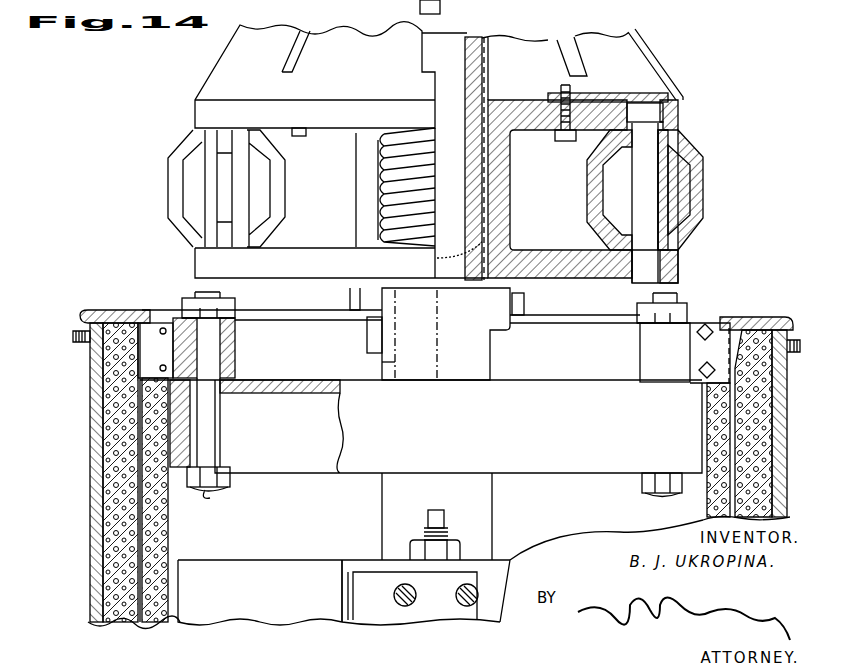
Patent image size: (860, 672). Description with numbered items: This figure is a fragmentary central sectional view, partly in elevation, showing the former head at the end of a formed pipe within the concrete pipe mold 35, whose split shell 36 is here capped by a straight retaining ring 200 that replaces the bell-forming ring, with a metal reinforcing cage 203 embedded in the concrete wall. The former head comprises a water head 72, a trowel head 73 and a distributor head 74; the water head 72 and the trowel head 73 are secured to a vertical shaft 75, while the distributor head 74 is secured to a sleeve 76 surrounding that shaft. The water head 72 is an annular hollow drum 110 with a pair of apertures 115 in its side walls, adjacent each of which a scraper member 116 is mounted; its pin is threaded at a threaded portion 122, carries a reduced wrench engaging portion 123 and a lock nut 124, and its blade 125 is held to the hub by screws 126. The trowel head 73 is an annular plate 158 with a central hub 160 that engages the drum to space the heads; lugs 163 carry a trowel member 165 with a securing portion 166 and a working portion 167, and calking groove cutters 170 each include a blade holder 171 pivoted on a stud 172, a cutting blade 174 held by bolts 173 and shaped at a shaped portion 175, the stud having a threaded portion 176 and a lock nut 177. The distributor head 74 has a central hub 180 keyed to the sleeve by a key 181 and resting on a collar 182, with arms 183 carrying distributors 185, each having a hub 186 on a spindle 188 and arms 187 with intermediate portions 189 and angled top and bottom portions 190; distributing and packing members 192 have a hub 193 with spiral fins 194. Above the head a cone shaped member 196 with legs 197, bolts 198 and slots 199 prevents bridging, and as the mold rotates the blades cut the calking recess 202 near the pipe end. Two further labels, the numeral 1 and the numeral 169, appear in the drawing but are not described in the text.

The plate 1 is at (237, 350).
The concrete pipe mold 35 is at (80, 468).
The split shell 36 is at (90, 490).
The water head 72 is at (285, 555).
The trowel head 73 is at (690, 445).
The distributor head 74 is at (205, 117).
The vertical shaft 75 is at (460, 42).
The sleeve 76 is at (482, 56).
The annular hollow drum 110 is at (218, 570).
The apertures 115 is at (345, 580).
The scraper member 116 is at (355, 575).
The threaded portion 122 is at (446, 536).
The wrench engaging portion 123 is at (433, 512).
The lock nut 124 is at (415, 547).
The blade 125 is at (365, 612).
The screws 126 is at (462, 618).
The annular plate 158 is at (262, 393).
The central hub 160 is at (492, 492).
The lugs 163 is at (392, 362).
The trowel member 165 is at (500, 355).
The securing portion 166 is at (380, 356).
The working portion 167 is at (482, 368).
The nut 169 is at (368, 334).
The calking groove cutters 170 is at (245, 332).
The blade holder 171 is at (155, 330).
The stud 172 is at (210, 366).
The bolts 173 is at (703, 325).
The cutting blade 174 is at (718, 340).
The shaped portion 175 is at (133, 362).
The threaded portion 176 is at (210, 296).
The lock nut 177 is at (230, 306).
The central hub 180 is at (500, 228).
The key 181 is at (485, 203).
The collar 182 is at (505, 298).
The arms 183 is at (200, 263).
The distributors 185 is at (165, 174).
The hub 186 is at (208, 205).
The arms 187 is at (222, 180).
The spindles 188 is at (640, 170).
The intermediate portion 189 is at (170, 162).
The top and bottom portions 190 is at (184, 140).
The distributing and packing members 192 is at (372, 226).
The hub 193 is at (392, 136).
The spiral fins 194 is at (378, 196).
The cone shaped member 196 is at (600, 40).
The legs 197 is at (610, 94).
The bolts 198 is at (560, 87).
The slots 199 is at (298, 34).
The straight retaining ring 200 is at (120, 312).
The calking recess 202 is at (775, 368).
The reinforcing cage 203 is at (145, 527).